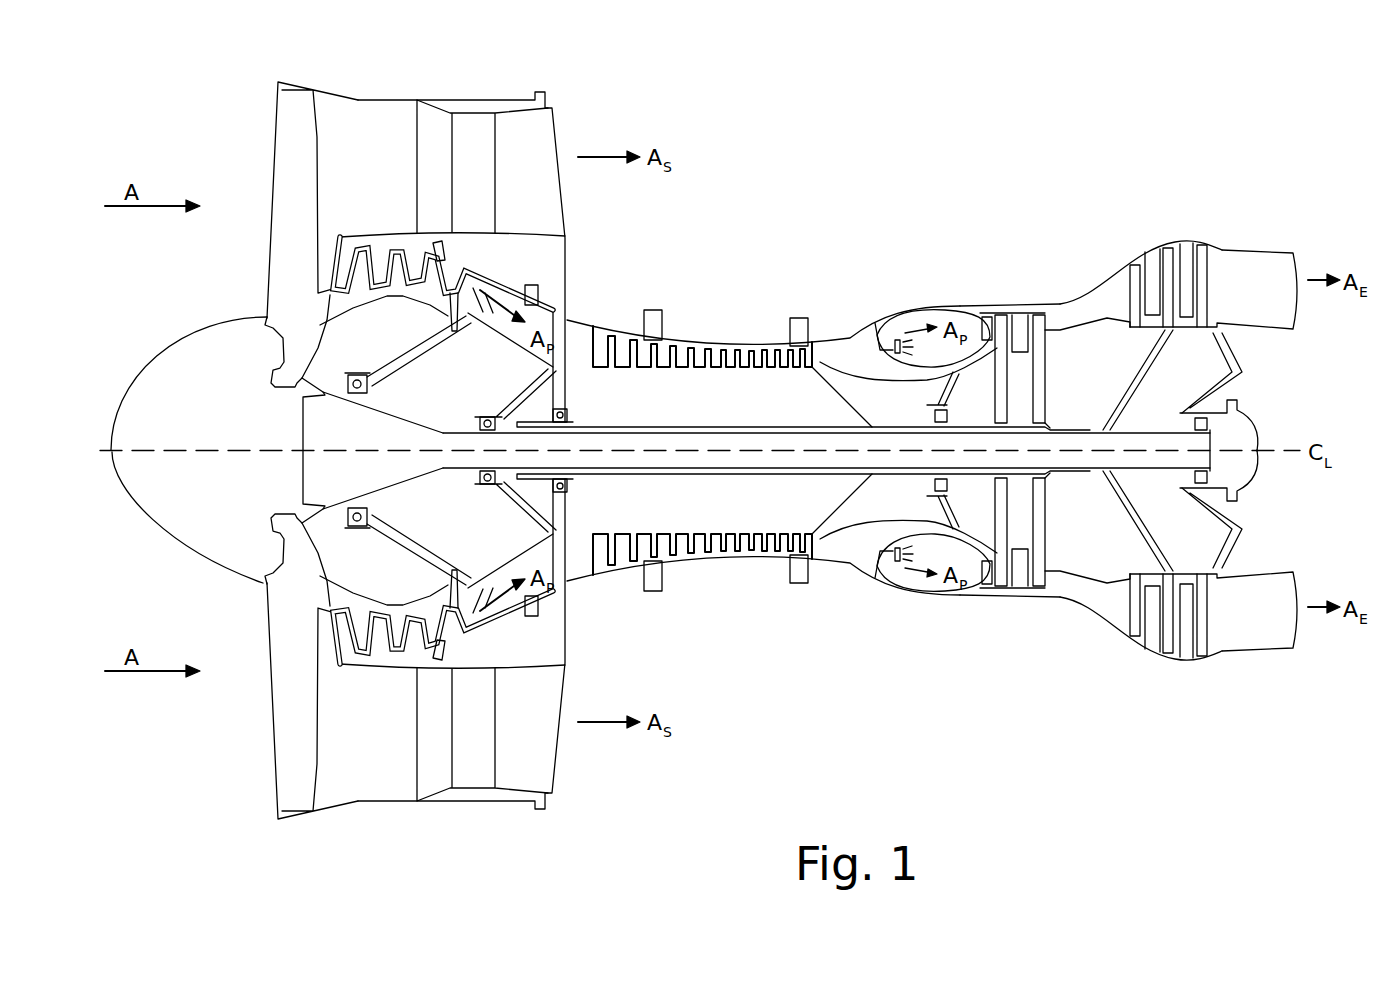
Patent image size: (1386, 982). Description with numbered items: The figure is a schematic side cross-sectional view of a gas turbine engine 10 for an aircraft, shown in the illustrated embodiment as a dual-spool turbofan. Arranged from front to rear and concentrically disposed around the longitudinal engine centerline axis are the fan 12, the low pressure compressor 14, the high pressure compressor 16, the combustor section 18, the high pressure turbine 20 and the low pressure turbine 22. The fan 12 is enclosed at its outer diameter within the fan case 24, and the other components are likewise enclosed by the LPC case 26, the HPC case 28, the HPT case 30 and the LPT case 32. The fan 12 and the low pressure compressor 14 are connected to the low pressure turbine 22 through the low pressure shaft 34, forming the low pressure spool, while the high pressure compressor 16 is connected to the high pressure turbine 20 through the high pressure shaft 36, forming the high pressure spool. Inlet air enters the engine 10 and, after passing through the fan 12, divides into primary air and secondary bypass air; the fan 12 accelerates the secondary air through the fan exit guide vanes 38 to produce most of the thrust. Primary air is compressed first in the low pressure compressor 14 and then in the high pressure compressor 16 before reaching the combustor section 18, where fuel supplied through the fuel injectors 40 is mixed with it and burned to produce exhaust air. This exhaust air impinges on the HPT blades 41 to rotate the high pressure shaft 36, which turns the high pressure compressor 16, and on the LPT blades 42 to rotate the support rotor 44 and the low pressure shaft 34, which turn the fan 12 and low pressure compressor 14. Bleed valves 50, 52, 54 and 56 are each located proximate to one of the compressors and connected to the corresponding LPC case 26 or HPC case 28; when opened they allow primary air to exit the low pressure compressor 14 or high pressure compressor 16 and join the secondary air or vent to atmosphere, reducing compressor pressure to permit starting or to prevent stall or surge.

The gas turbine engine 10 is at (1080, 150).
The fan 12 is at (275, 728).
The low pressure compressor 14 is at (406, 662).
The high pressure compressor 16 is at (746, 582).
The combustor section 18 is at (937, 306).
The high pressure turbine 20 is at (1001, 620).
The low pressure turbine 22 is at (1133, 665).
The fan case 24 is at (390, 98).
The LPC case 26 is at (393, 240).
The HPC case 28 is at (718, 345).
The HPT case 30 is at (1055, 302).
The LPT case 32 is at (1205, 243).
The low pressure shaft 34 is at (795, 440).
The high pressure shaft 36 is at (878, 568).
The fan exit guide vanes 38 is at (485, 193).
The fuel injectors 40 is at (878, 327).
The HPT blades 41 is at (1031, 588).
The LPT blades 42 is at (1133, 290).
The support rotor 44 is at (1138, 382).
The bleed valve 50 is at (446, 253).
The bleed valve 52 is at (540, 290).
The bleed valve 54 is at (654, 308).
The bleed valve 56 is at (805, 316).